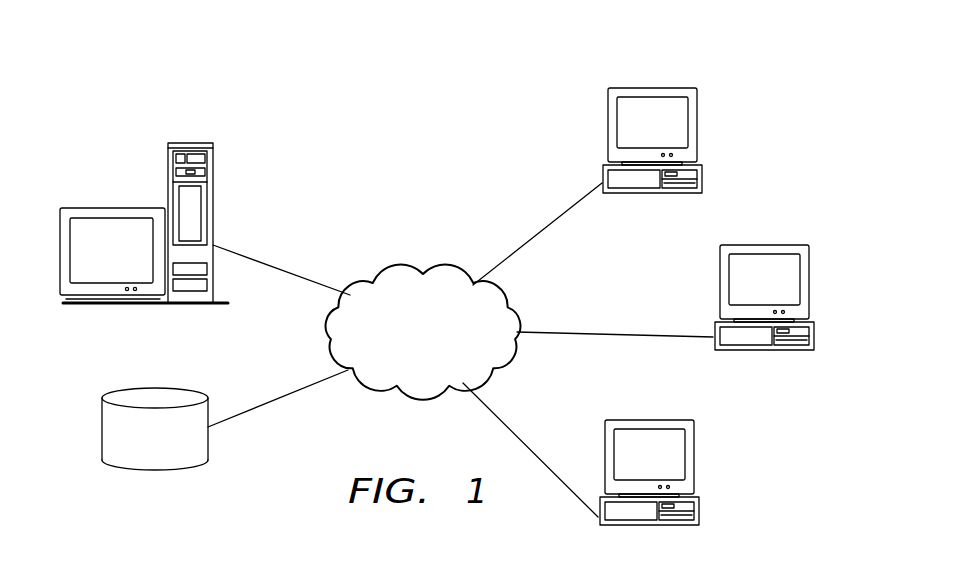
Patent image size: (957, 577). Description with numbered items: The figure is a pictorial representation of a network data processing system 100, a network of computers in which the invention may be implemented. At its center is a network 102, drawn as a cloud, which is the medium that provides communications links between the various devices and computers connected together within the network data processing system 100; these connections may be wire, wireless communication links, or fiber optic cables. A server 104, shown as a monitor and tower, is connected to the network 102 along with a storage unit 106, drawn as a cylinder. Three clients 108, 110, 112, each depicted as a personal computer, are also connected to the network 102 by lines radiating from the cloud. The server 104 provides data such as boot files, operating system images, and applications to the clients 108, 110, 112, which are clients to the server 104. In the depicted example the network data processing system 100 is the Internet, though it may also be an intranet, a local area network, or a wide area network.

The network data processing system 100 is at (299, 125).
The network 102 is at (404, 359).
The server 104 is at (168, 165).
The storage unit 106 is at (102, 428).
The client 108 is at (697, 135).
The client 110 is at (807, 286).
The client 112 is at (693, 462).